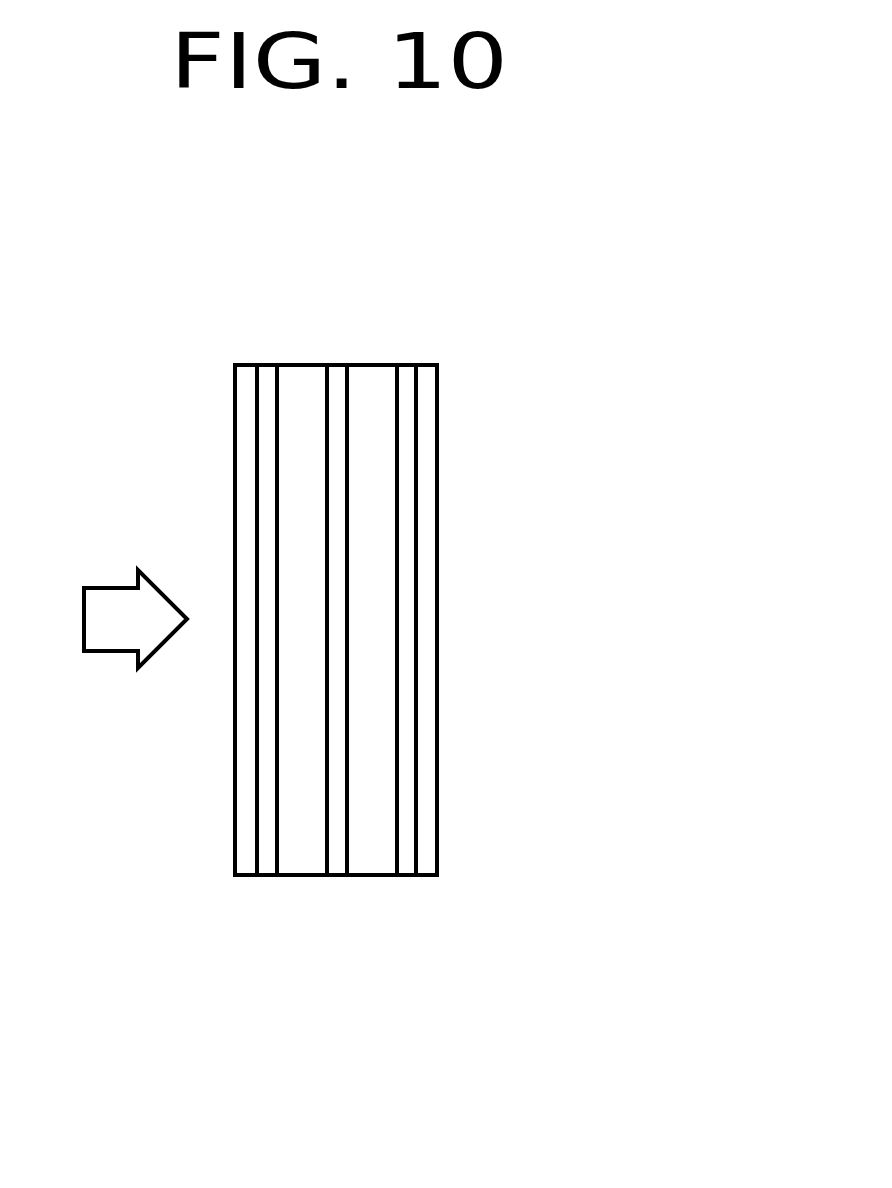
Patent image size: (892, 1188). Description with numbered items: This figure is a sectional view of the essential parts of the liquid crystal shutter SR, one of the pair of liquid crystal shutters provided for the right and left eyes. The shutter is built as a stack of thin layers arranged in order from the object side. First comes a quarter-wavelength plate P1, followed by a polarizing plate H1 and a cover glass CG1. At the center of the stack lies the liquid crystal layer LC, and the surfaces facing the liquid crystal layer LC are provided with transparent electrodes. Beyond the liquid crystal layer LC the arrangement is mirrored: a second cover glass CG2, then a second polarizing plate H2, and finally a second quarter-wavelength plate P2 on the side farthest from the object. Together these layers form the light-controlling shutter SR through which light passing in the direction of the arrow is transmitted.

The liquid crystal shutter SR is at (505, 407).
The ¼ wavelength plate P1 is at (235, 875).
The polarizing plate H1 is at (263, 875).
The cover glass CG1 is at (300, 365).
The liquid crystal layer LC is at (332, 875).
The cover glass CG2 is at (380, 365).
The polarizing plate H2 is at (402, 875).
The ¼ wavelength plate P2 is at (423, 875).